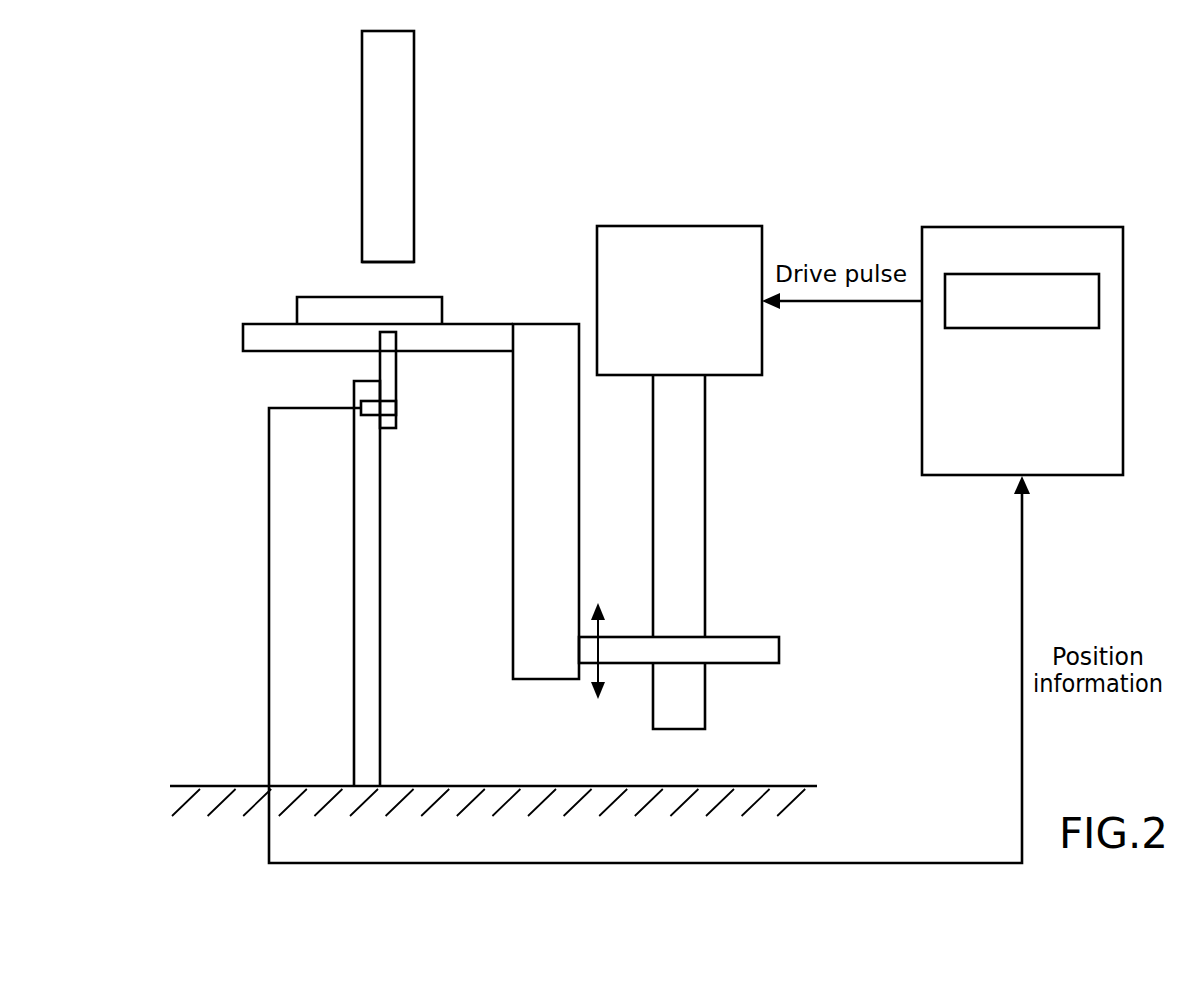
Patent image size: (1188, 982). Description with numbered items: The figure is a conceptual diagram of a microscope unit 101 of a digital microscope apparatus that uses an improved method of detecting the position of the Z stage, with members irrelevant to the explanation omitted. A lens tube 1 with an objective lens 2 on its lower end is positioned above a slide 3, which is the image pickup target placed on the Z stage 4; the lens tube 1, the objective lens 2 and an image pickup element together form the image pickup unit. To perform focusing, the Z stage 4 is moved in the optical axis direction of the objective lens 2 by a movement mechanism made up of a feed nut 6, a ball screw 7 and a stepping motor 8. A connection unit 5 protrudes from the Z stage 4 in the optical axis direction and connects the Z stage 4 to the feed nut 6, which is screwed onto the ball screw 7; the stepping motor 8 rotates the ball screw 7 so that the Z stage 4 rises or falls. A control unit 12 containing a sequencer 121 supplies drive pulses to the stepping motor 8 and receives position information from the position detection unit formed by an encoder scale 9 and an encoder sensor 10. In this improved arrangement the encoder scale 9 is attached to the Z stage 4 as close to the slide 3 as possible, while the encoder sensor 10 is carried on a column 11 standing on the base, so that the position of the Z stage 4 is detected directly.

The lens tube 1 is at (414, 76).
The objective lens 2 is at (387, 250).
The slide 3 is at (442, 310).
The Z stage 4 is at (243, 343).
The connection unit 5 is at (513, 474).
The feed nut 6 is at (762, 663).
The ball screw 7 is at (705, 475).
The stepping motor 8 is at (714, 226).
The encoder scale 9 is at (396, 366).
The encoder sensor 10 is at (387, 408).
The column 11 is at (380, 617).
The control unit 12 is at (1074, 227).
The microscope unit 101 is at (823, 146).
The sequencer 121 is at (1099, 301).